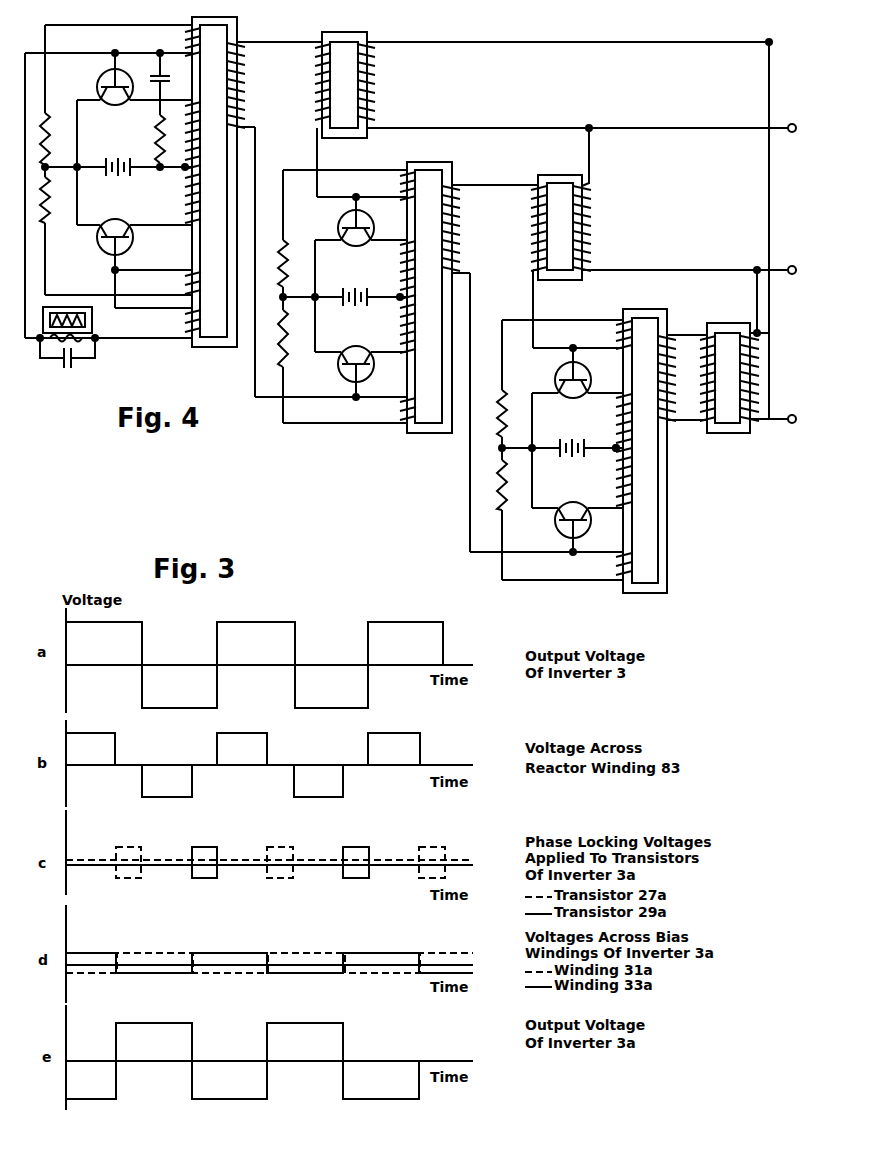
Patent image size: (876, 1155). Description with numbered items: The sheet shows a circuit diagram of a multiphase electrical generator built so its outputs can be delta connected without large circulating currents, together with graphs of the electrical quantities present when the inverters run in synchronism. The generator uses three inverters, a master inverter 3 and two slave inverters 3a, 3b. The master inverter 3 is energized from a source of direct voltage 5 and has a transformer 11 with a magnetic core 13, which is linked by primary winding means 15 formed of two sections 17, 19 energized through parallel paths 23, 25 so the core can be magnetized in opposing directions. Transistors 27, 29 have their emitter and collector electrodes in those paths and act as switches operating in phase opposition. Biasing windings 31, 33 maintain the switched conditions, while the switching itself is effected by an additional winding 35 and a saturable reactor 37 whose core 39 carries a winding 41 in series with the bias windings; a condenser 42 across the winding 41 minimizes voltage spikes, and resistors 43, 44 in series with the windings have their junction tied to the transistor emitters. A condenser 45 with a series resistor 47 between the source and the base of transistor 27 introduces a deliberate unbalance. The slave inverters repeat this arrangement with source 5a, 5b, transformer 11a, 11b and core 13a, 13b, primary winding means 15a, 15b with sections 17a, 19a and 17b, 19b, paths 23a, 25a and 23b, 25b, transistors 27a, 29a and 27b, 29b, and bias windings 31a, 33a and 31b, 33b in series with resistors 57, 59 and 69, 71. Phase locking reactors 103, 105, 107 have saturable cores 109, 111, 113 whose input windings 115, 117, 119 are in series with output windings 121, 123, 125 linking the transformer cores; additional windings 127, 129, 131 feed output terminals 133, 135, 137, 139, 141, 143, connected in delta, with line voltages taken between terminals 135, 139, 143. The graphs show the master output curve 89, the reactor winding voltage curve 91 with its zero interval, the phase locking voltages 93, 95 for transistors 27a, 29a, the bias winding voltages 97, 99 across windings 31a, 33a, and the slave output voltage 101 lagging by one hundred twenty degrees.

In FIG. 4, the master inverter 3 is at (130, 17).
In FIG. 4, the transformer 11 is at (236, 16).
In FIG. 4, the magnetic core 13 is at (203, 347).
In FIG. 4, the biasing winding 31 is at (190, 48).
In FIG. 4, the winding section 17 is at (194, 120).
In FIG. 4, the winding section 19 is at (198, 213).
In FIG. 4, the primary winding means 15 is at (190, 177).
In FIG. 4, the transistor 27 is at (103, 75).
In FIG. 4, the transistor 29 is at (104, 246).
In FIG. 4, the condenser 45 is at (152, 76).
In FIG. 4, the resistor 43 is at (45, 115).
In FIG. 4, the resistor 44 is at (45, 217).
In FIG. 4, the resistor 47 is at (155, 125).
In FIG. 4, the source of direct voltage 5 is at (118, 157).
In FIG. 4, the parallel path 23 is at (103, 126).
In FIG. 4, the parallel path 25 is at (103, 205).
In FIG. 4, the output winding 121 is at (242, 81).
In FIG. 4, the biasing winding 33 is at (189, 286).
In FIG. 4, the additional winding 35 is at (189, 330).
In FIG. 4, the saturable magnetic core 39 is at (93, 323).
In FIG. 4, the saturable reactor 37 is at (123, 361).
In FIG. 4, the winding 41 is at (69, 308).
In FIG. 4, the condenser 42 is at (59, 362).
In FIG. 4, the phase locking reactor 103 is at (368, 22).
In FIG. 4, the saturable magnetic core 109 is at (367, 37).
In FIG. 4, the input winding 115 is at (318, 68).
In FIG. 4, the additional winding 127 is at (373, 72).
In FIG. 4, the transformer 11a is at (450, 158).
In FIG. 4, the magnetic core 13a is at (412, 431).
In FIG. 4, the bias winding 31a is at (402, 187).
In FIG. 4, the winding section 17a is at (405, 250).
In FIG. 4, the primary winding means 15a is at (405, 308).
In FIG. 4, the winding section 19a is at (410, 356).
In FIG. 4, the bias winding 33a is at (403, 410).
In FIG. 4, the output winding 123 is at (455, 204).
In FIG. 4, the transistor 27a is at (339, 228).
In FIG. 4, the transistor 29a is at (338, 369).
In FIG. 4, the resistor 57 is at (283, 242).
In FIG. 4, the resistor 59 is at (283, 361).
In FIG. 4, the source of direct voltage 5a is at (356, 290).
In FIG. 4, the parallel path 23a is at (350, 266).
In FIG. 4, the parallel path 25a is at (352, 341).
In FIG. 4, the slave inverter 3a is at (353, 453).
In FIG. 4, the phase locking reactor 105 is at (578, 168).
In FIG. 4, the saturable magnetic core 111 is at (574, 281).
In FIG. 4, the input winding 117 is at (536, 228).
In FIG. 4, the additional winding 129 is at (588, 224).
In FIG. 4, the output terminal 135 is at (591, 126).
In FIG. 4, the output terminal 137 is at (591, 183).
In FIG. 4, the output terminal 133 is at (767, 42).
In FIG. 4, the output terminal 139 is at (757, 268).
In FIG. 4, the transformer 11b is at (671, 308).
In FIG. 4, the magnetic core 13b is at (637, 590).
In FIG. 4, the bias winding 31b is at (620, 337).
In FIG. 4, the winding section 17b is at (621, 398).
In FIG. 4, the primary winding means 15b is at (618, 455).
In FIG. 4, the winding section 19b is at (618, 500).
In FIG. 4, the bias winding 33b is at (620, 569).
In FIG. 4, the output winding 125 is at (672, 344).
In FIG. 4, the transistor 27b is at (557, 367).
In FIG. 4, the transistor 29b is at (556, 522).
In FIG. 4, the resistor 69 is at (505, 393).
In FIG. 4, the resistor 71 is at (500, 502).
In FIG. 4, the source of direct voltage 5b is at (569, 442).
In FIG. 4, the parallel path 23b is at (565, 423).
In FIG. 4, the parallel path 25b is at (572, 501).
In FIG. 4, the slave inverter 3b is at (458, 513).
In FIG. 4, the phase locking reactor 107 is at (747, 321).
In FIG. 4, the saturable magnetic core 113 is at (738, 433).
In FIG. 4, the input winding 119 is at (698, 412).
In FIG. 4, the additional winding 131 is at (760, 380).
In FIG. 4, the output terminal 141 is at (770, 334).
In FIG. 4, the output terminal 143 is at (766, 421).
In FIG. 3, the curve 89 is at (250, 622).
In FIG. 3, the curve 91 is at (232, 733).
In FIG. 3, the curve 93 is at (127, 845).
In FIG. 3, the curve 95 is at (201, 846).
In FIG. 3, the curve 97 is at (148, 953).
In FIG. 3, the curve 99 is at (231, 953).
In FIG. 3, the output voltage 101 is at (158, 1023).